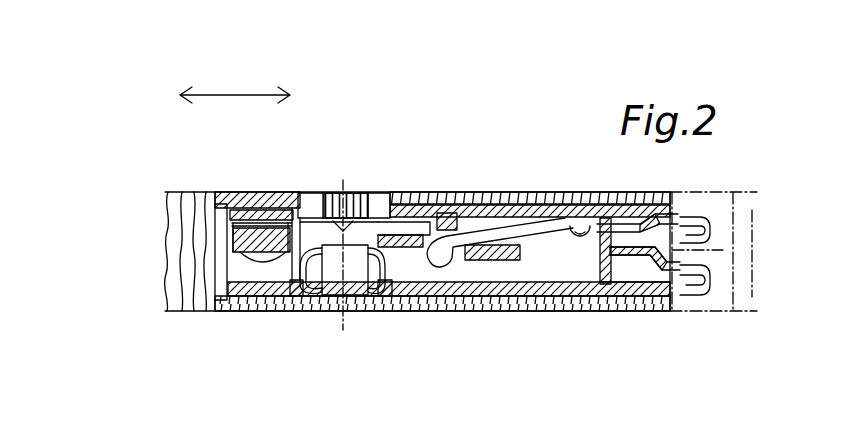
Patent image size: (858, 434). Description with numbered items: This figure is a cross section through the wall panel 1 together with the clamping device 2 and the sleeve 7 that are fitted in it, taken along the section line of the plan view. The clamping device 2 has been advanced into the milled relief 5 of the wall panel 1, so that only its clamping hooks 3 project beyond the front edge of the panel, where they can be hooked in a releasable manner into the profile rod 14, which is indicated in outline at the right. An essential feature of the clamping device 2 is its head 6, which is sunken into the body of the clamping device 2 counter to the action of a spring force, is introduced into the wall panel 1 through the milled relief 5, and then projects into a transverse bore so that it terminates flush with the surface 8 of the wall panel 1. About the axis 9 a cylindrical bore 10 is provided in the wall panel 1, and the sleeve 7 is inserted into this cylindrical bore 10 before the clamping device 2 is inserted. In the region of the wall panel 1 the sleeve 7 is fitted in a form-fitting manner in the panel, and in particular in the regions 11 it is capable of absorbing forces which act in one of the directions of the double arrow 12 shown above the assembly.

The wall panel 1 is at (168, 241).
The clamping device 2 is at (660, 311).
The clamping hooks 3 is at (712, 311).
The milled relief 5 is at (203, 214).
The head 6 is at (377, 192).
The sleeve 7 is at (416, 193).
The surface 8 is at (500, 176).
The axis 9 is at (337, 348).
The cylindrical bore 10 is at (237, 313).
The regions 11 is at (450, 193).
The double arrow 12 is at (226, 95).
The profile rod 14 is at (733, 195).